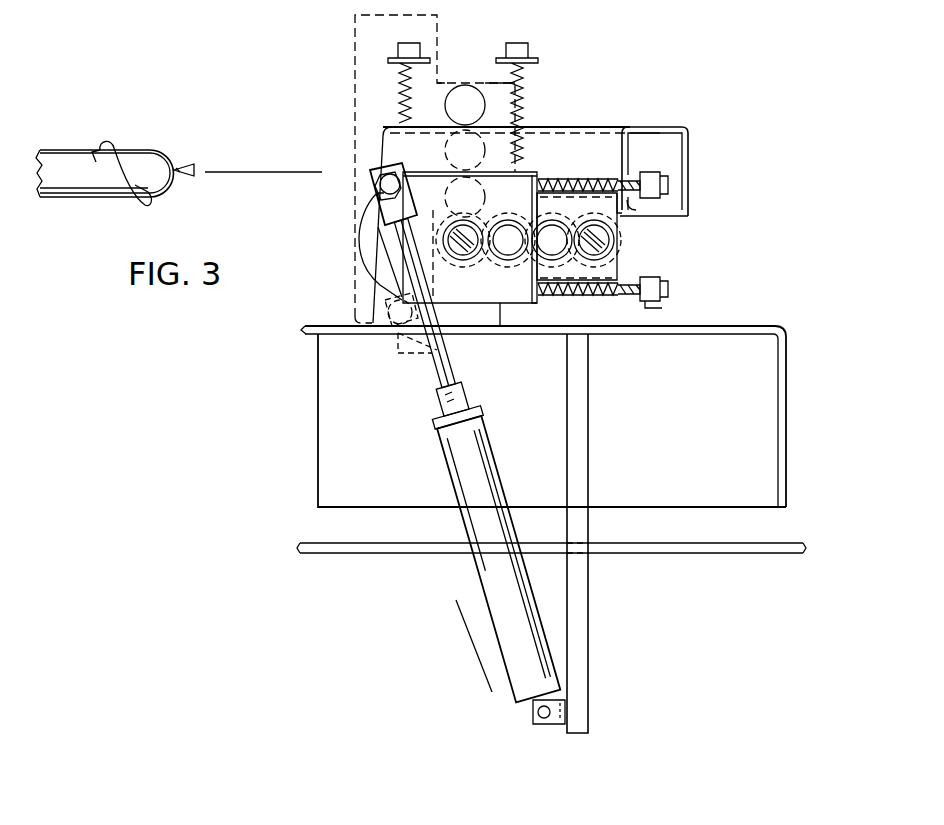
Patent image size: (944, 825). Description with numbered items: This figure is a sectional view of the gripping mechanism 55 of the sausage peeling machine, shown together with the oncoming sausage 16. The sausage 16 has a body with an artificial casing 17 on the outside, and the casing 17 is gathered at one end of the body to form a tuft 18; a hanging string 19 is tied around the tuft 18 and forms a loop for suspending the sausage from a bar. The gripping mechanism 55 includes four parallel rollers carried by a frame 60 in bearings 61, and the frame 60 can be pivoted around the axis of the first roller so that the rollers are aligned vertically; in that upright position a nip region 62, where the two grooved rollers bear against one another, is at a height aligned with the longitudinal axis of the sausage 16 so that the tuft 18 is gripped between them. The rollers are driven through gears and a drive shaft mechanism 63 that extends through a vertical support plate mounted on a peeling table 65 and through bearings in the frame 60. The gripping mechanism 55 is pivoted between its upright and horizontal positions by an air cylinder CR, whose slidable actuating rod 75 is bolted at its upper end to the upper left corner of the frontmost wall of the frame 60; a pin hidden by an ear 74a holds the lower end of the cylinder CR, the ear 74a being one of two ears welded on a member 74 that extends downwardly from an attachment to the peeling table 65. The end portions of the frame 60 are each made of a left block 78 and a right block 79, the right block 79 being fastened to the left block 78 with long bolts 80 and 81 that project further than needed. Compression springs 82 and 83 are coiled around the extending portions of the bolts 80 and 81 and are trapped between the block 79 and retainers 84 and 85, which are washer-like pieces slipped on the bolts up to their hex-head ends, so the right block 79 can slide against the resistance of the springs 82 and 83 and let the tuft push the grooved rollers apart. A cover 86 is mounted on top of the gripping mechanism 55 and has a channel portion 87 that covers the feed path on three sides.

The sausage 16 is at (101, 104).
The artificial casing 17 is at (70, 162).
The tuft 18 is at (190, 165).
The hanging string 19 is at (108, 145).
The gripping mechanism 55 is at (604, 80).
The frame 60 is at (358, 310).
The bearings 61 is at (468, 255).
The nip region 62 is at (441, 172).
The drive shaft mechanism 63 is at (466, 243).
The peeling table 65 is at (742, 326).
The member 74 is at (590, 631).
The ear 74a is at (553, 724).
The actuating rod 75 is at (436, 376).
The left block 78 is at (507, 298).
The right block 79 is at (563, 272).
The bolt 80 is at (662, 185).
The bolt 81 is at (672, 289).
The compression spring 82 is at (636, 195).
The compression spring 83 is at (624, 283).
The retainer 84 is at (686, 212).
The retainer 85 is at (648, 310).
The cover 86 is at (668, 112).
The channel portion 87 is at (660, 138).
The air cylinder CR is at (497, 630).